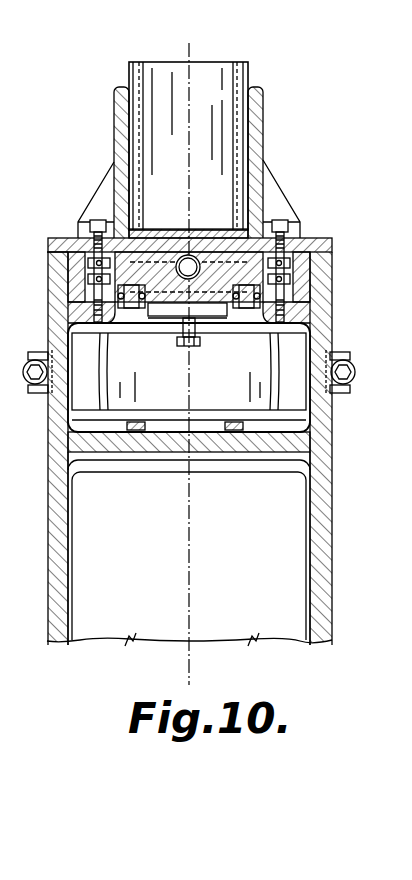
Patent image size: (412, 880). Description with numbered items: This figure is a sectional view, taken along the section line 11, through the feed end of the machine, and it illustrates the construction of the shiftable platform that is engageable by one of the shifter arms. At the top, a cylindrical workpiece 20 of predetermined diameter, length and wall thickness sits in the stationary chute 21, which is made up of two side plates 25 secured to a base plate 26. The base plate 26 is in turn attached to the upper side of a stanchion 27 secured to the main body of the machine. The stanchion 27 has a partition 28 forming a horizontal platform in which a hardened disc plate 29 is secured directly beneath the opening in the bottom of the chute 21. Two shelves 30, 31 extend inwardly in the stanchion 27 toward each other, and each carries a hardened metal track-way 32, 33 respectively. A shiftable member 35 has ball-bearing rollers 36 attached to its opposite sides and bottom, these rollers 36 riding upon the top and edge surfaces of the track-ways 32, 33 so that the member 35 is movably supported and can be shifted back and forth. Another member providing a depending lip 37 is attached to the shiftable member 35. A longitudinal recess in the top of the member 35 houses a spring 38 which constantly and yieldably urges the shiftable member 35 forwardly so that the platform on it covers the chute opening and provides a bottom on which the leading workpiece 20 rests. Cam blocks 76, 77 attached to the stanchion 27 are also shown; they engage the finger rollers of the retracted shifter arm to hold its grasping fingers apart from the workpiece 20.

The section line 11 is at (189, 43).
The cylindrical workpiece 20 is at (252, 79).
The stationary chute 21 is at (262, 137).
The side plates 25 is at (120, 127).
The base plate 26 is at (301, 240).
The stanchion 27 is at (325, 535).
The partition 28 is at (145, 445).
The hardened disc plate 29 is at (263, 440).
The shelf 30 is at (78, 315).
The shelf 31 is at (298, 315).
The track-way 32 is at (75, 280).
The track-way 33 is at (300, 283).
The shiftable member 35 is at (148, 248).
The ball-bearing rollers 36 is at (97, 258).
The depending lip 37 is at (213, 312).
The spring 38 is at (192, 256).
The cam block 76 is at (30, 393).
The cam block 77 is at (348, 393).